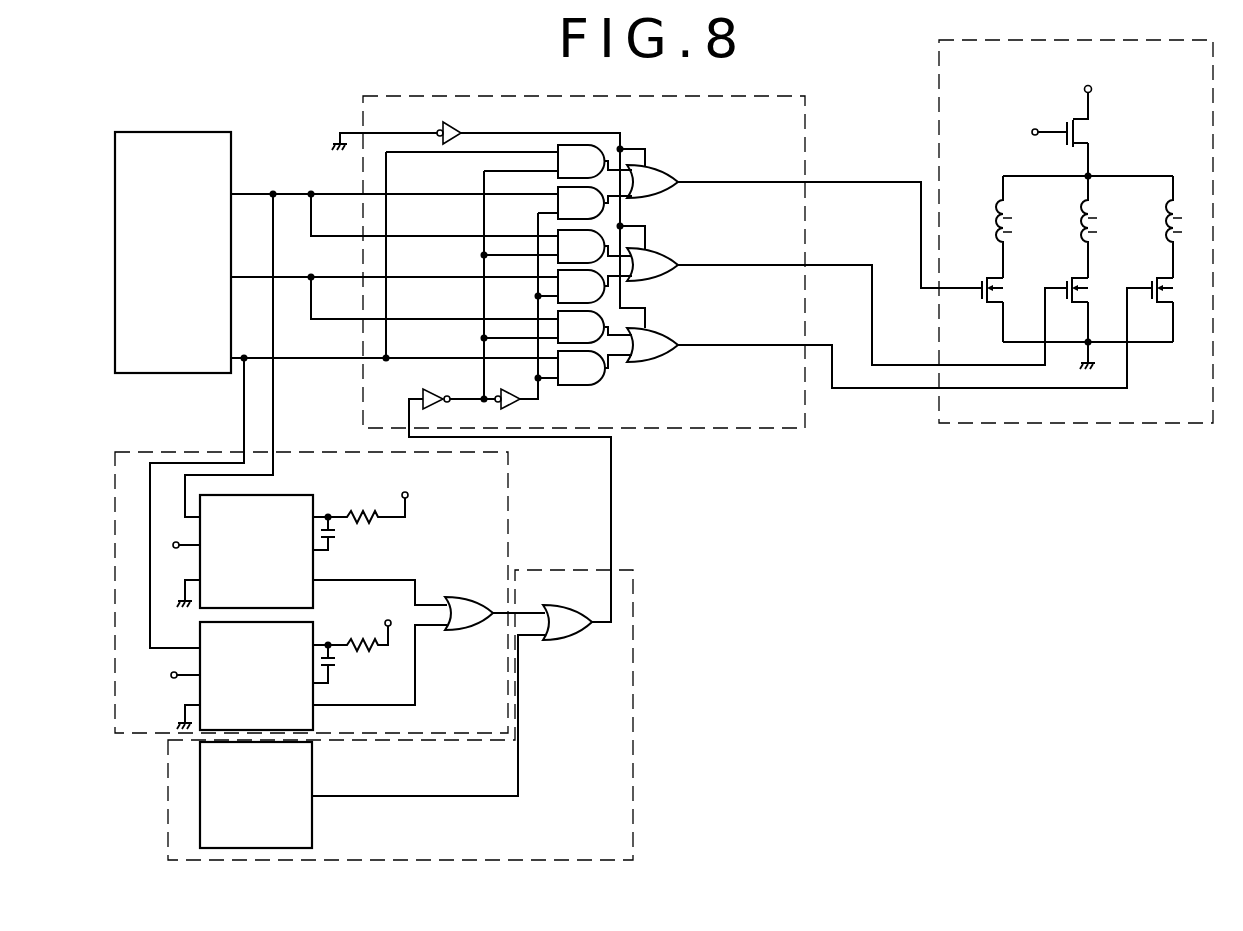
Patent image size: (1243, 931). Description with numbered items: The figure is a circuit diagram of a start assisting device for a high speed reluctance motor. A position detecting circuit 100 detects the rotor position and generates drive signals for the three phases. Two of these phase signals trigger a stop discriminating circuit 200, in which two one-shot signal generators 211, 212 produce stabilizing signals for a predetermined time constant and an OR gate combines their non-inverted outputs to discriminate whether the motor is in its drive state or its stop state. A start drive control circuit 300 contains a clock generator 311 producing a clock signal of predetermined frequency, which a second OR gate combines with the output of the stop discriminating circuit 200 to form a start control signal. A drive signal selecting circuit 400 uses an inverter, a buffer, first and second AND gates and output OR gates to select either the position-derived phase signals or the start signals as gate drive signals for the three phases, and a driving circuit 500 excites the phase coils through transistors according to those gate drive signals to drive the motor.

The position detecting circuit 100 is at (208, 132).
The stop discriminating circuit 200 is at (330, 463).
The one-shot signal generator 211 is at (272, 495).
The one-shot signal generator 212 is at (198, 690).
The start drive control circuit 300 is at (437, 715).
The clock generator 311 is at (312, 830).
The drive signal selecting circuit 400 is at (746, 96).
The driving circuit 500 is at (1052, 424).